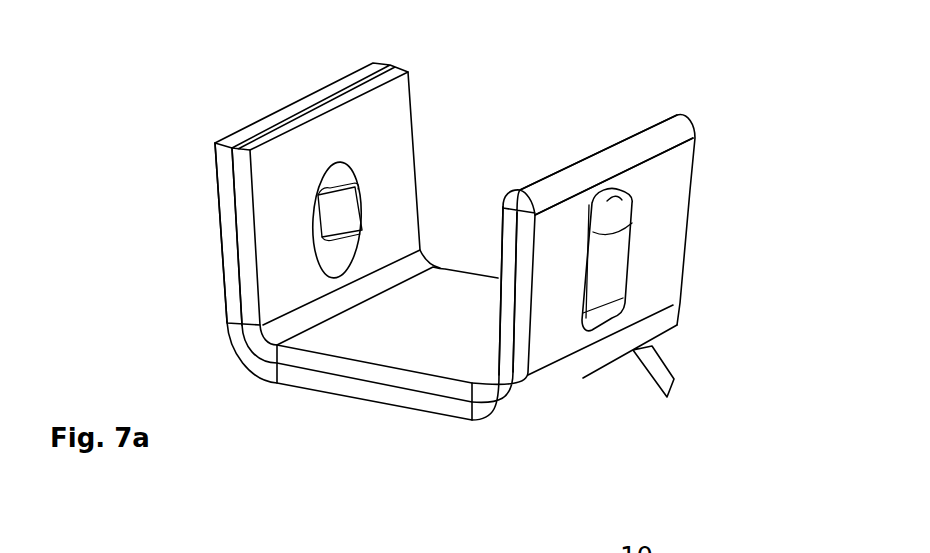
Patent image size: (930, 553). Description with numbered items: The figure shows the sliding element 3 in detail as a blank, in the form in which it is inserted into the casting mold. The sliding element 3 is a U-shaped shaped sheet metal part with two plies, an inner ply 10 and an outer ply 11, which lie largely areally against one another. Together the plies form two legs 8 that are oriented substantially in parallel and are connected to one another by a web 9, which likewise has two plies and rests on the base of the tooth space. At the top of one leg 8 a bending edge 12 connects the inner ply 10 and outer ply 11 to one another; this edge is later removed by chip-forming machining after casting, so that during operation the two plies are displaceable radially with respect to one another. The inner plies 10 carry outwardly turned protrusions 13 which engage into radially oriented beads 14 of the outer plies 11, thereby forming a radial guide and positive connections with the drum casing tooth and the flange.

The sliding element 3 is at (483, 277).
The leg 8 is at (417, 133).
The web 9 is at (297, 397).
The inner ply 10 is at (242, 182).
The outer ply 11 is at (227, 192).
The bending edge 12 is at (620, 155).
The protrusion 13 is at (345, 210).
The bead 14 is at (613, 262).